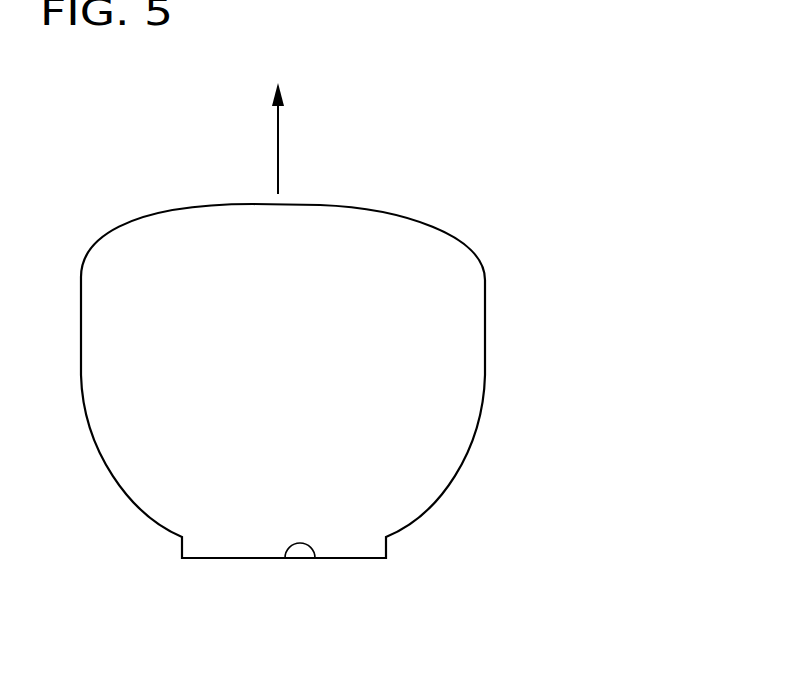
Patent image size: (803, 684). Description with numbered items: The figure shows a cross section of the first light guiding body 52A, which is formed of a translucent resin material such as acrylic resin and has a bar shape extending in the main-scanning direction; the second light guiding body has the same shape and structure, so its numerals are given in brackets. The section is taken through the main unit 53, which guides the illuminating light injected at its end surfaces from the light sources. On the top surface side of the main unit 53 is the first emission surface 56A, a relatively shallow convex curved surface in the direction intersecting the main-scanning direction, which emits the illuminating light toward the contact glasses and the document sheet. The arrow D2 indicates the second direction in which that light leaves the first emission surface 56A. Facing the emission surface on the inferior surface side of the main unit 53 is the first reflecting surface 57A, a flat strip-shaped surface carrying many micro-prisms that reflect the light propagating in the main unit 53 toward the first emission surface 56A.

The first light guiding body 52A is at (391, 393).
The main unit 53 is at (485, 373).
The first emission surface 56A is at (361, 208).
The first reflecting surface 57A is at (312, 552).
The second direction D2 is at (278, 116).